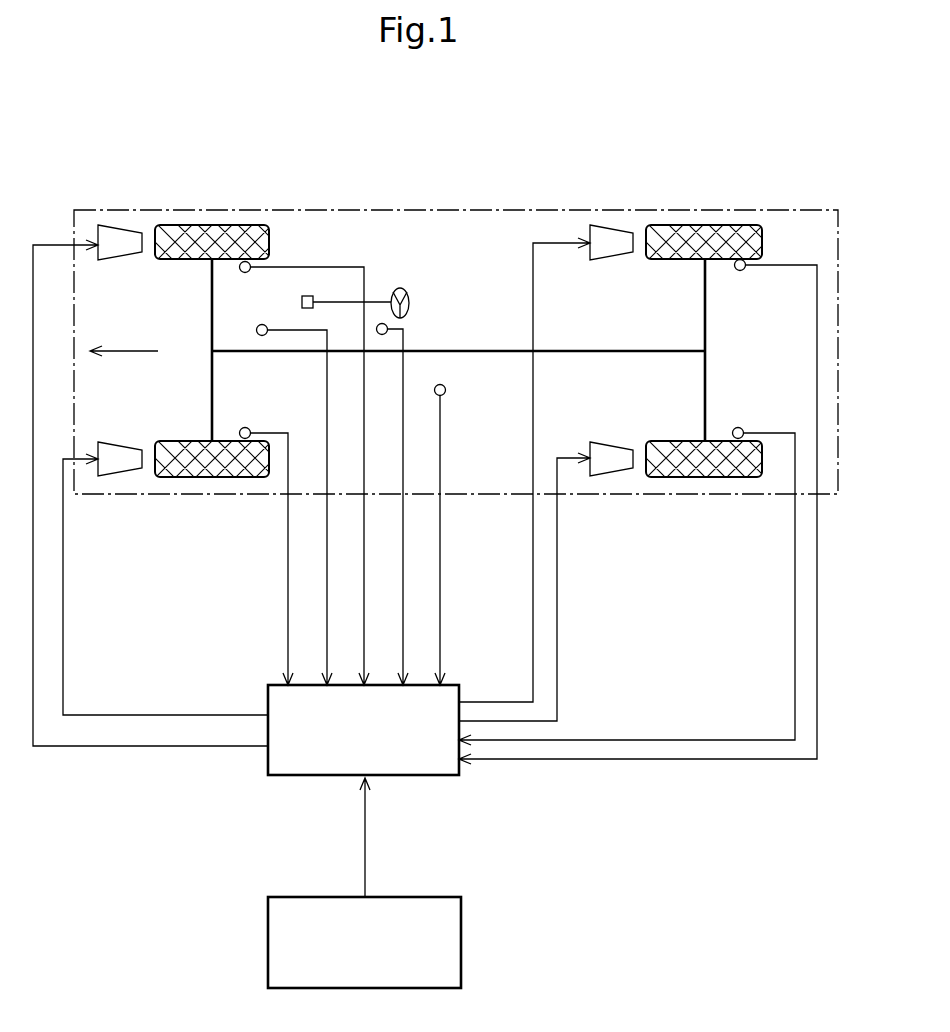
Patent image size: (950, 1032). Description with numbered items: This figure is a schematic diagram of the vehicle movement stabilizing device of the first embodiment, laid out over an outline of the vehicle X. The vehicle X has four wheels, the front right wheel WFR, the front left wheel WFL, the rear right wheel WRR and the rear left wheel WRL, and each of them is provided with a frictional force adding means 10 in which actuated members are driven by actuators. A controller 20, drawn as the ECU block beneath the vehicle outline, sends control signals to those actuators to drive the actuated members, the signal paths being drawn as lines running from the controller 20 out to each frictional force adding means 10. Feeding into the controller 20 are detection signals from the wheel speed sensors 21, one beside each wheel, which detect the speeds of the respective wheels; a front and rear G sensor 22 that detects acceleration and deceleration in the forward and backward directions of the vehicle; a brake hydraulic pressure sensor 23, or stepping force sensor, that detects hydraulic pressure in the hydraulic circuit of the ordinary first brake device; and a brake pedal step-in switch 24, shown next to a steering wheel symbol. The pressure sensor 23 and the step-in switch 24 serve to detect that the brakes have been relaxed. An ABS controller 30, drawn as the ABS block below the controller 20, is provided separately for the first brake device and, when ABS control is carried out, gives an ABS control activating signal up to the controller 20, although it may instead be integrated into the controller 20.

The frictional force adding means 10 is at (118, 210).
The controller 20 is at (434, 780).
The wheel speed sensors 21 is at (252, 264).
The front and rear G sensor 22 is at (446, 388).
The brake hydraulic pressure sensor 23 is at (261, 324).
The brake pedal step-in switch 24 is at (388, 327).
The ABS controller 30 is at (455, 942).
The vehicle X is at (352, 210).
The front right wheel WFR is at (212, 222).
The front left wheel WFL is at (203, 478).
The rear right wheel WRR is at (707, 222).
The rear left wheel WRL is at (700, 478).